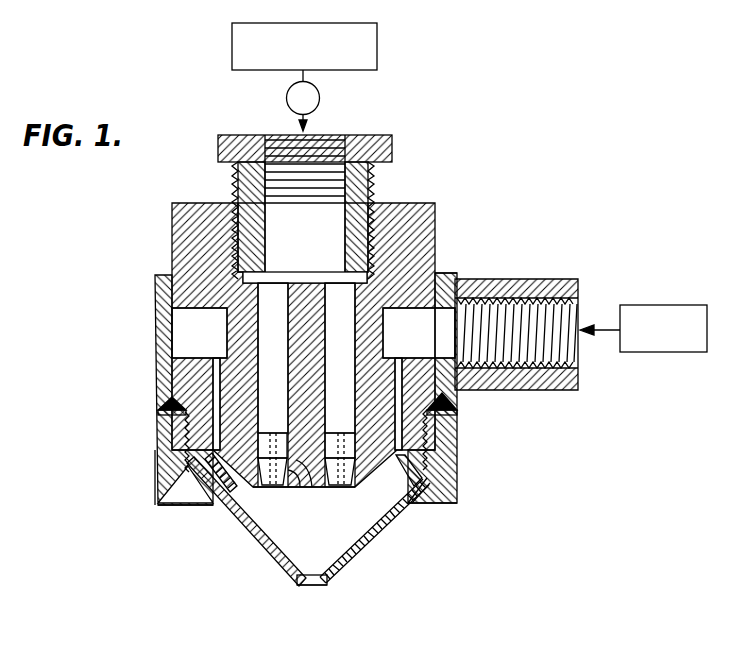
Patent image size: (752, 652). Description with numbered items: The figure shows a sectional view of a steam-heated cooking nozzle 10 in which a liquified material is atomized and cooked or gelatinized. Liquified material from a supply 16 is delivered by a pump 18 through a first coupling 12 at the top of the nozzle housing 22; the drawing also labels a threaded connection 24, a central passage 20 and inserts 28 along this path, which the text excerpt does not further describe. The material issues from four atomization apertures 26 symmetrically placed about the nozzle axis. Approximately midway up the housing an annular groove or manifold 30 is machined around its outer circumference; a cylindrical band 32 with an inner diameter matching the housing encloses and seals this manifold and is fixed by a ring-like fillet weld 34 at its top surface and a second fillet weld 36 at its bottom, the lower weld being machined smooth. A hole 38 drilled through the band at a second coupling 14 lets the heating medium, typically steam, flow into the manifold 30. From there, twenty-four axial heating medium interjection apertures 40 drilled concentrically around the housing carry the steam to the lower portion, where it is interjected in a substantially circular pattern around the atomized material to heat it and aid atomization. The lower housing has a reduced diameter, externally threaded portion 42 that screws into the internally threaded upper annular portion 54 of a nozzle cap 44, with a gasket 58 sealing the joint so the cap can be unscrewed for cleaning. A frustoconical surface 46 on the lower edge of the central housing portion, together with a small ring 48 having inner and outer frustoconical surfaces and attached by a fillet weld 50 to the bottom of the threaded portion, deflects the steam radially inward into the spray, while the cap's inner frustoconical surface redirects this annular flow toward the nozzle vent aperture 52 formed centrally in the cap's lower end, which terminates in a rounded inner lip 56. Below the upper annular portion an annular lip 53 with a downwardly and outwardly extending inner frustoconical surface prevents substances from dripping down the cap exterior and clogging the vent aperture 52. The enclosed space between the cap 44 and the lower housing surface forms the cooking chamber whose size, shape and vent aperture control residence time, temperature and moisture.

The extrusion nozzle apparatus 10 is at (455, 212).
The inlet fitting 12 is at (229, 135).
The coupling 14 is at (578, 281).
The liquified material source 16 is at (378, 46).
The pump 18 is at (320, 98).
The nozzle body bottom face 20 is at (303, 487).
The nozzle housing 22 is at (437, 243).
The threaded bore 24 is at (372, 238).
The atomization apertures 26 is at (266, 413).
The nozzle inserts 28 is at (255, 488).
The annular groove (manifold) 30 is at (180, 350).
The cylindrical band 32 is at (156, 296).
The fillet weld 34 is at (440, 272).
The fillet weld 36 is at (160, 403).
The hole 38 is at (455, 356).
The heating medium interjection apertures 40 is at (217, 368).
The reduced diameter portion 42 is at (430, 452).
The nozzle cap 44 is at (268, 557).
The frustoconical surface 46 is at (381, 500).
The ring 48 is at (410, 500).
The fillet weld 50 is at (430, 498).
The nozzle vent aperture 52 is at (312, 587).
The annular lip 53 is at (160, 503).
The upper annular portion 54 is at (158, 462).
The rounded inner lip 56 is at (308, 577).
The gasket 58 is at (178, 428).